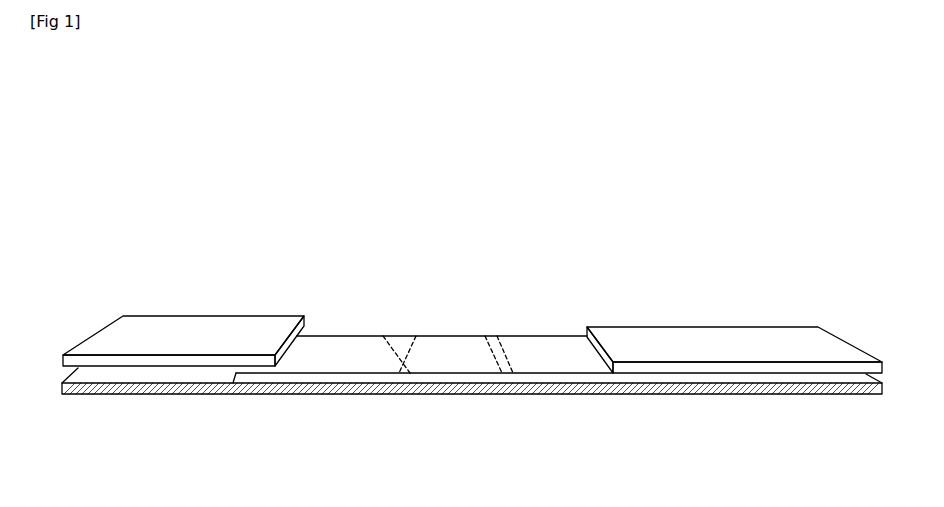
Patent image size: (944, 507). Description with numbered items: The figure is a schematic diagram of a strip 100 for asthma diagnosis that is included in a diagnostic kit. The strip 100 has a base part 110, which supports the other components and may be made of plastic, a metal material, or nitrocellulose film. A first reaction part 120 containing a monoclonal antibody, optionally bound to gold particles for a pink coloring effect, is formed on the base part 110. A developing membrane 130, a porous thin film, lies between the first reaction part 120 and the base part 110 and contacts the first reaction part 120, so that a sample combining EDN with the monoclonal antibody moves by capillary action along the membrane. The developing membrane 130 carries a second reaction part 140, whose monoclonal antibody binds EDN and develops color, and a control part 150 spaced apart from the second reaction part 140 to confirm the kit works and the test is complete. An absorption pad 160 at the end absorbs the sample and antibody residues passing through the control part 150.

The strip 100 is at (631, 200).
The base part 110 is at (573, 390).
The first reaction part 120 is at (178, 322).
The developing membrane 130 is at (311, 377).
The second reaction part 140 is at (387, 337).
The control part 150 is at (502, 353).
The absorption pad 160 is at (735, 342).